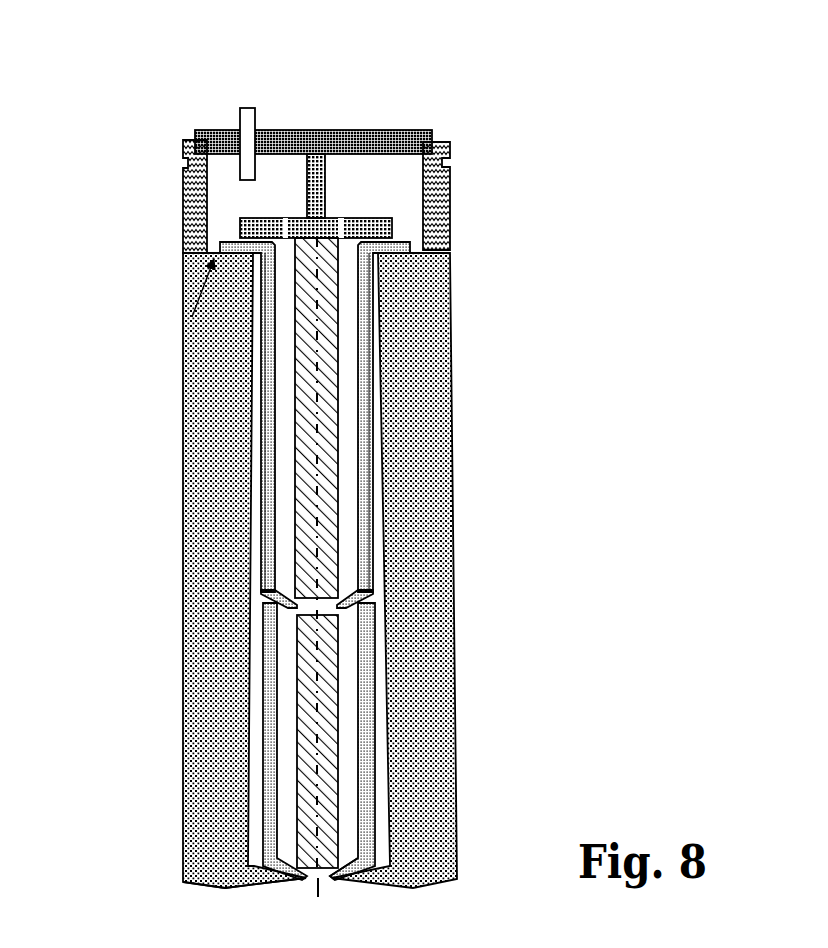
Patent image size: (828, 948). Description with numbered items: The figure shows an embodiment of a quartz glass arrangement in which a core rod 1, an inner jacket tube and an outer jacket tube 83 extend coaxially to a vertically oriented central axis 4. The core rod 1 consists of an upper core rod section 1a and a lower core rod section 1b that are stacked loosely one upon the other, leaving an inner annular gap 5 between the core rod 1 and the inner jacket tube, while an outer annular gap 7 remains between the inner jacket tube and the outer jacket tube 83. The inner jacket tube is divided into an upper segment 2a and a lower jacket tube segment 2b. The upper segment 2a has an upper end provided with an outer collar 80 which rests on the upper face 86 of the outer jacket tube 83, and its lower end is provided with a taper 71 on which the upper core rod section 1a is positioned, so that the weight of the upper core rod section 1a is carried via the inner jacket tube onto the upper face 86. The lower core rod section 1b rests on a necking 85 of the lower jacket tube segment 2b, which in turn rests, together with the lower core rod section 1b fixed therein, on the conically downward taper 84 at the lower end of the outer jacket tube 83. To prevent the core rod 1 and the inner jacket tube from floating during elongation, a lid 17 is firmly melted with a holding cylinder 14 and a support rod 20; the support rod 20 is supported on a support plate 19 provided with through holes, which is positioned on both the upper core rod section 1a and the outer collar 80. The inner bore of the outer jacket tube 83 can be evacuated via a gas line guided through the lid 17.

The core rod 1 is at (301, 567).
The upper core rod section 1a is at (337, 375).
The lower core rod section 1b is at (338, 707).
The upper segment of the inner jacket tube 2a is at (372, 515).
The lower jacket tube segment 2b is at (263, 695).
The central axis 4 is at (315, 122).
The inner annular gap 5 is at (297, 540).
The outer annular gap 7 is at (297, 475).
The holding cylinder 14 is at (197, 215).
The lid 17 is at (198, 132).
The support plate 19 is at (372, 218).
The support rod 20 is at (323, 195).
The tube flare 71 is at (263, 602).
The outer collar 80 is at (432, 233).
The outer jacket tube 83 is at (207, 432).
The taper 84 is at (215, 870).
The necking 85 is at (333, 877).
The upper face of the outer jacket tube 86 is at (192, 317).